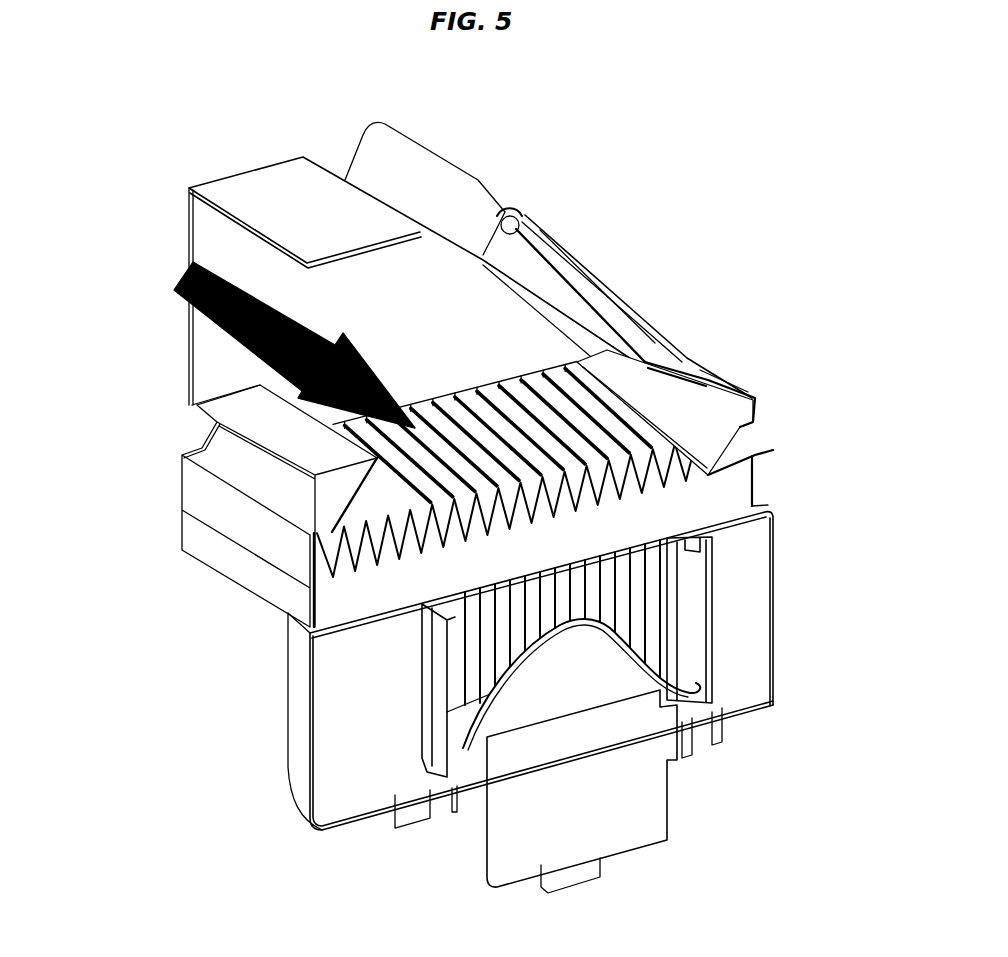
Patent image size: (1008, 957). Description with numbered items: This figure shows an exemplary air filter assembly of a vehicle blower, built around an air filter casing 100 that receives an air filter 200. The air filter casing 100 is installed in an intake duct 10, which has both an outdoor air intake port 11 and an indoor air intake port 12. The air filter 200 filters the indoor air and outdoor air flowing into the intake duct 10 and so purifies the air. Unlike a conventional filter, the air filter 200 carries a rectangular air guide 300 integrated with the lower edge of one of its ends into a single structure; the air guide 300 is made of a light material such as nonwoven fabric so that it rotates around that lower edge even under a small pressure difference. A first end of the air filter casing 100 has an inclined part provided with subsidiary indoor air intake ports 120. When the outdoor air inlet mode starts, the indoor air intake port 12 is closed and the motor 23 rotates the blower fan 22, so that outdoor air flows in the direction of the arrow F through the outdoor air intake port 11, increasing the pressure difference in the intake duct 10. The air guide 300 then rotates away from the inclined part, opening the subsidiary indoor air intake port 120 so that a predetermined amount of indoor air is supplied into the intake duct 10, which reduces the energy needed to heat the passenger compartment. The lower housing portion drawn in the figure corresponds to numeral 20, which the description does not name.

The intake duct 10 is at (262, 188).
The outdoor air intake port 11 is at (222, 242).
The indoor air intake port 12 is at (592, 278).
The lower housing 20 is at (300, 760).
The blower fan 22 is at (677, 623).
The motor 23 is at (650, 832).
The air filter casing 100 is at (757, 455).
The subsidiary indoor air intake port 120 is at (738, 438).
The air filter 200 is at (768, 505).
The air guide 300 is at (713, 423).
The arrow F is at (189, 300).